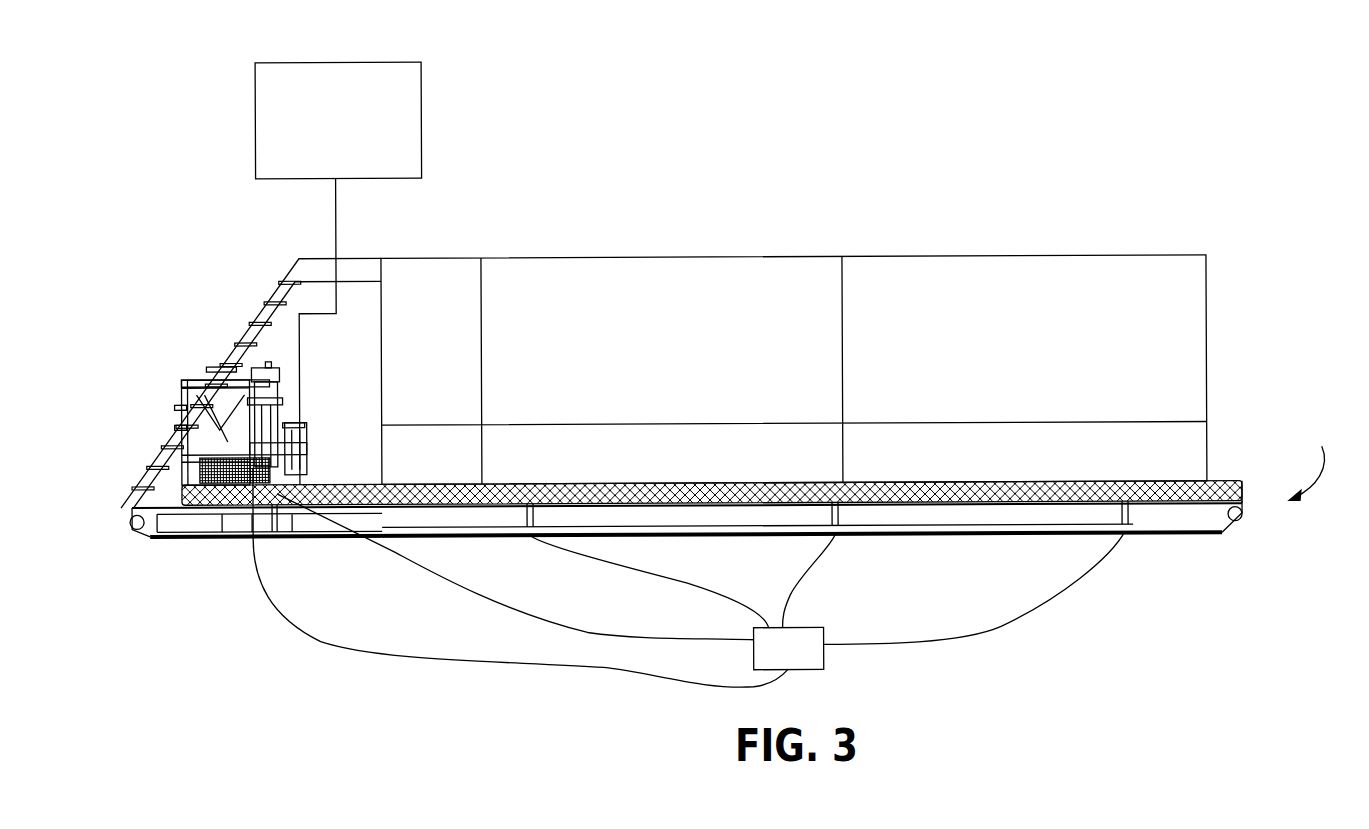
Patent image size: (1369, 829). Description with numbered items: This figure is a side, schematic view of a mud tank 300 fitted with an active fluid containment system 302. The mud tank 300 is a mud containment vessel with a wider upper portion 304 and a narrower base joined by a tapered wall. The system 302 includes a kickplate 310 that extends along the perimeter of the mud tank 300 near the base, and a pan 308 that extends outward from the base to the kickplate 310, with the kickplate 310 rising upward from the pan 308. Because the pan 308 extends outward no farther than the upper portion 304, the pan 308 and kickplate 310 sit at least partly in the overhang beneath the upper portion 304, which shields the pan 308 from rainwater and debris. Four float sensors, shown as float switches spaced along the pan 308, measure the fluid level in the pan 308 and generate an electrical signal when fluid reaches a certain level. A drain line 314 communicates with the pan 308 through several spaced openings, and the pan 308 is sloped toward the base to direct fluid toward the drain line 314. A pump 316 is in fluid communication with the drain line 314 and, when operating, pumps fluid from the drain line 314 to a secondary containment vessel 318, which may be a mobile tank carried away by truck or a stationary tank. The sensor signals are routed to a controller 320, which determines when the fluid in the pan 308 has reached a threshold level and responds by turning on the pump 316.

The mud tank 300 is at (1090, 254).
The active fluid containment system 302 is at (1309, 460).
The upper portion 304 is at (1010, 480).
The pan 308 is at (1028, 537).
The kickplate 310 is at (1223, 479).
The drain line 314 is at (703, 538).
The pump 316 is at (297, 387).
The secondary containment vessel 318 is at (349, 127).
The controller 320 is at (804, 660).